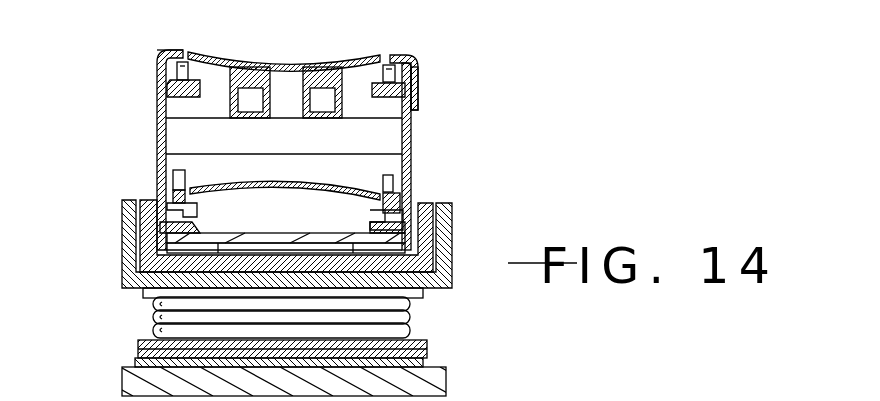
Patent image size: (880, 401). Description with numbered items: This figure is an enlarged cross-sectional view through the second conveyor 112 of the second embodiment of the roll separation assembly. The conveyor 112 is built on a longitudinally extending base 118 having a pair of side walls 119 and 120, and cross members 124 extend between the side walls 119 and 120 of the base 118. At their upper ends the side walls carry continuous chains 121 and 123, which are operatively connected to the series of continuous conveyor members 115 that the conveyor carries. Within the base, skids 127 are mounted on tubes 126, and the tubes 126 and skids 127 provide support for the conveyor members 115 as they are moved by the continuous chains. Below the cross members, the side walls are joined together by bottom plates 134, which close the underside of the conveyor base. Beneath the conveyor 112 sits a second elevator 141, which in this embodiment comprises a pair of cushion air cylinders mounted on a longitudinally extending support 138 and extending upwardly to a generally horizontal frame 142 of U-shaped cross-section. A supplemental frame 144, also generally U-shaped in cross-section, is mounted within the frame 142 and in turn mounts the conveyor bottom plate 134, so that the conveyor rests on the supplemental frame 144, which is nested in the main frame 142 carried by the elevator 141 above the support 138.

The second longitudinally extending conveyor 112 is at (230, 58).
The continuous conveyor members 115 is at (338, 66).
The longitudinally extending base 118 is at (422, 151).
The side wall 119 is at (157, 132).
The side wall 120 is at (412, 130).
The continuous chain 121 is at (157, 70).
The continuous chain 123 is at (420, 63).
The cross members 124 is at (303, 160).
The tubes 126 is at (268, 120).
The skids 127 is at (256, 60).
The bottom plates 134 is at (245, 227).
The longitudinal extending support 138 is at (447, 372).
The second elevator 141 is at (410, 320).
The frame 142 is at (130, 287).
The supplemental frame 144 is at (420, 208).